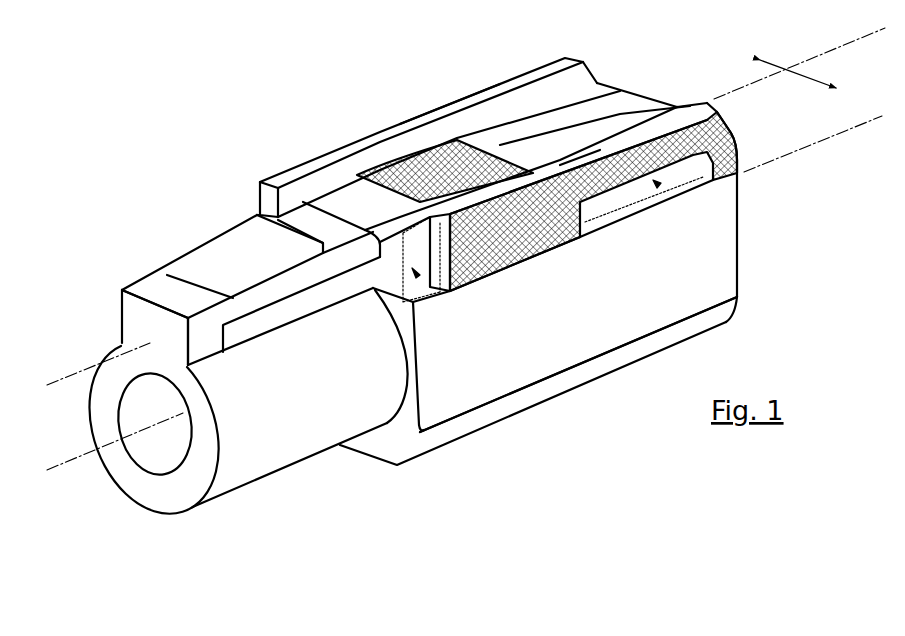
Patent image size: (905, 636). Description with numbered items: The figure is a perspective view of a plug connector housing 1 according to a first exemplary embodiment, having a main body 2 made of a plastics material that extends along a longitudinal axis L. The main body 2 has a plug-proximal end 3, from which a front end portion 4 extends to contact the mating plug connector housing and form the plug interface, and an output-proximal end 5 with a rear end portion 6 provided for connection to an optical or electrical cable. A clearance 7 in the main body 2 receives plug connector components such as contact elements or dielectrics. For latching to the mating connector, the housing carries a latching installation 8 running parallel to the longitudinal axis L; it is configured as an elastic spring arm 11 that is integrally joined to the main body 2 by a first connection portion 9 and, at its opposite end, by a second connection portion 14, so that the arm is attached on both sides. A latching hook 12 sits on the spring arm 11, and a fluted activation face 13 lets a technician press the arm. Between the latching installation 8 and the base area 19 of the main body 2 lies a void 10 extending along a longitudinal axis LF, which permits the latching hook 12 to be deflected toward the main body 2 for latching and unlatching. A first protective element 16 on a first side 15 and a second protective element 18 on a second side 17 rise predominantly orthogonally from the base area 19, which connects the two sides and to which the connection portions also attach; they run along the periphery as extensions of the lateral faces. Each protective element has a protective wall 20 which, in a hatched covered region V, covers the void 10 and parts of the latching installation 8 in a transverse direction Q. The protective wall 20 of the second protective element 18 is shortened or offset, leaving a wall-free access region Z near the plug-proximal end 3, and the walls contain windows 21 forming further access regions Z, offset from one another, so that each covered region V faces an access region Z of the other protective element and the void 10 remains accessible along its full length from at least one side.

The plug connector housing 1 is at (95, 107).
The main body 2 is at (731, 283).
The plug-proximal end 3 is at (123, 290).
The front end portion 4 is at (155, 503).
The output-proximal end 5 is at (613, 83).
The rear end portion 6 is at (657, 362).
The clearance 7 is at (150, 452).
The latching installation 8 is at (403, 180).
The first connection portion 9 is at (130, 325).
The void 10 is at (382, 277).
The spring arm 11 is at (297, 200).
The latching hook 12 is at (248, 222).
The fluted activation face 13 is at (378, 175).
The second connection portion 14 is at (663, 108).
The first side 15 is at (440, 103).
The first protective element 16 is at (492, 88).
The second side 17 is at (605, 268).
The second protective element 18 is at (707, 103).
The base area 19 is at (250, 318).
The protective wall 20 is at (593, 157).
The window 21 is at (713, 180).
The longitudinal axis L is at (66, 462).
The longitudinal axis of the void LF is at (68, 380).
The covered region V is at (727, 133).
The transverse direction Q is at (783, 58).
The access region Z is at (417, 272).